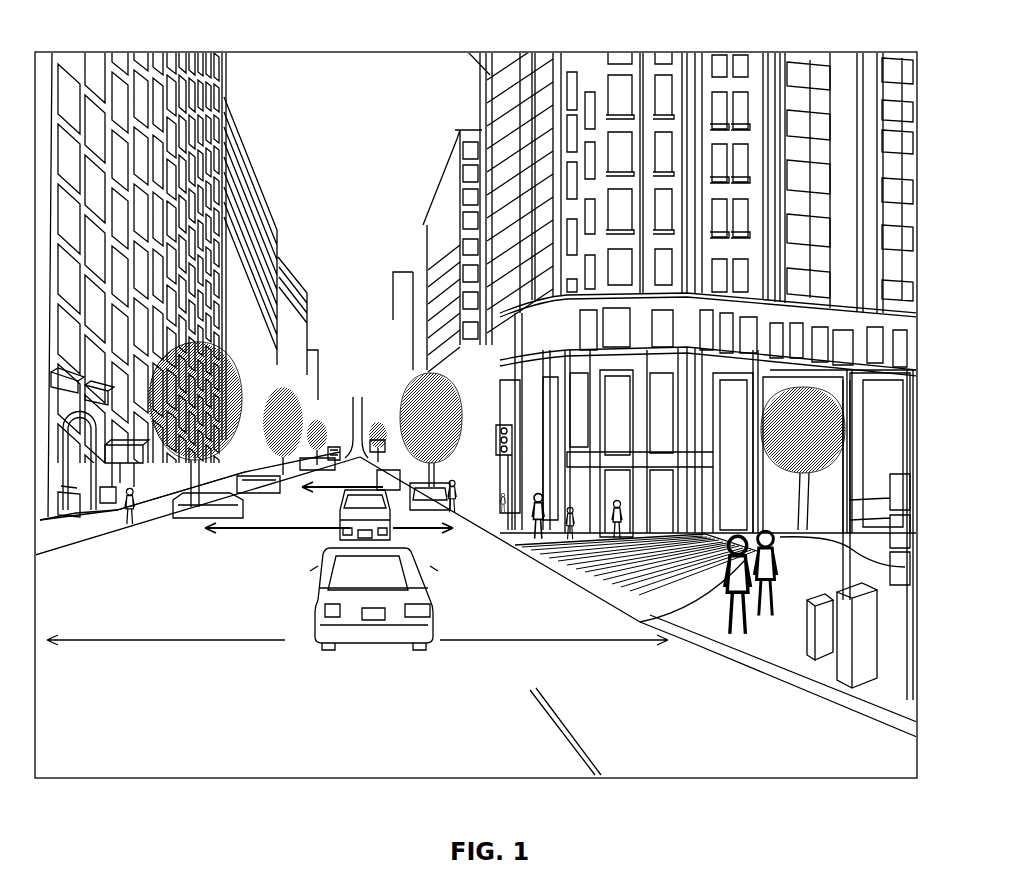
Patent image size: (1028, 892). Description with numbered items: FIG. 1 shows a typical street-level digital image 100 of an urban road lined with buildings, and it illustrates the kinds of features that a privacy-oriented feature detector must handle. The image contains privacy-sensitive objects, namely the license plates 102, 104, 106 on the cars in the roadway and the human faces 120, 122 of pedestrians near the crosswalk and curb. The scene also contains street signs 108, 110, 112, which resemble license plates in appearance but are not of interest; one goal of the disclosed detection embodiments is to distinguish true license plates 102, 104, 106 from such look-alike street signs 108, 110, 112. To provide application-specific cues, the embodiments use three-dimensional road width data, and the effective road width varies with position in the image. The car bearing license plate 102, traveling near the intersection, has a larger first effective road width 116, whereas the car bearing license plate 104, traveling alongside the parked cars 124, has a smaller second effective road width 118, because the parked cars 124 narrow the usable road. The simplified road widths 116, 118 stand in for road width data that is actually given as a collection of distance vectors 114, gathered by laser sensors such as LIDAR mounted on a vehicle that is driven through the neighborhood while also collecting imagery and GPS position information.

The driving environment 100 is at (1006, 79).
The license plate 102 is at (424, 612).
The license plate 104 is at (337, 538).
The license plate 106 is at (203, 510).
The street sign 108 is at (857, 610).
The street sign 110 is at (905, 490).
The street sign 112 is at (462, 515).
The collection of distance vectors 114 is at (300, 505).
The first effective road width 116 is at (285, 640).
The second effective road width 118 is at (252, 532).
The human face 120 is at (640, 598).
The human face 122 is at (905, 566).
The parked cars 124 is at (175, 520).